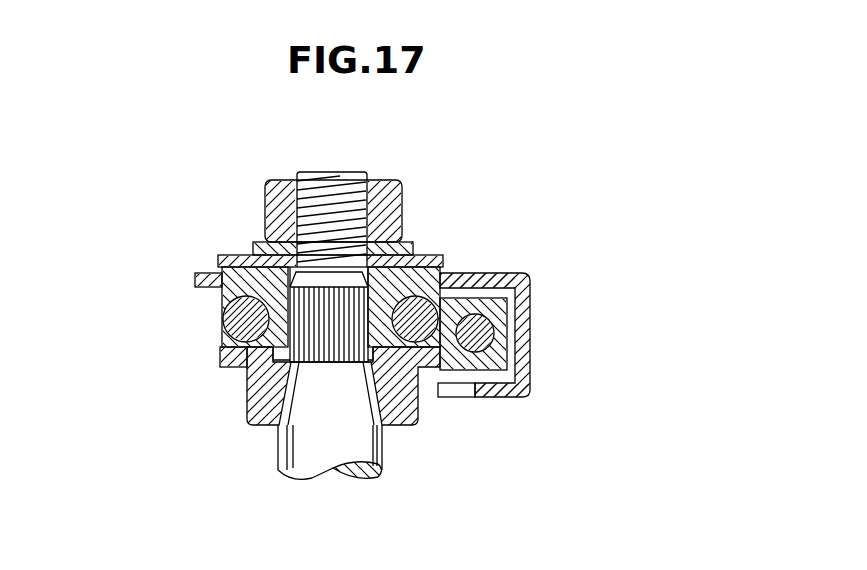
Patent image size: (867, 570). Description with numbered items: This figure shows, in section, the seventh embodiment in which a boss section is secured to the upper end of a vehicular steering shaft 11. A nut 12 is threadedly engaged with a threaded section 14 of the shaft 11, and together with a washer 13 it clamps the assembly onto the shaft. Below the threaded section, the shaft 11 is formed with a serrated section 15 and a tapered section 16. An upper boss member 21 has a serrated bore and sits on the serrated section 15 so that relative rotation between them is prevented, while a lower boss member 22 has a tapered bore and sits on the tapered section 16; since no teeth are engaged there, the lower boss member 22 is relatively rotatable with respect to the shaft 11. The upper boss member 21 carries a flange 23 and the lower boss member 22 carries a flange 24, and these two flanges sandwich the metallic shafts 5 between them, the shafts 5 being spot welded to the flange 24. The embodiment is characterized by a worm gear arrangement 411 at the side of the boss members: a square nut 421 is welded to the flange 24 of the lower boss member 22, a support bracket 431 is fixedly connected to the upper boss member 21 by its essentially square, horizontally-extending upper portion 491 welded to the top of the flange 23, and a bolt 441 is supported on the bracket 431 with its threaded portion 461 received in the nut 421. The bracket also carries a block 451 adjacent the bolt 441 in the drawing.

The threaded section 14 is at (323, 178).
The nut 12 is at (386, 186).
The washer 13 is at (253, 241).
The flange 23 is at (243, 268).
The upper boss member 21 is at (225, 318).
The metallic shaft 5 is at (280, 313).
The serrated section 15 is at (372, 298).
The flange 24 is at (222, 355).
The lower boss member 22 is at (250, 402).
The tapered section 16 is at (368, 407).
The vehicular steering shaft 11 is at (305, 468).
The worm gear arrangement 411 is at (565, 325).
The support bracket 431 is at (532, 288).
The upper portion 491 is at (480, 273).
The square nut 421 is at (508, 398).
The block 451 is at (508, 357).
The threaded portion 461 is at (570, 333).
The bolt 441 is at (495, 335).